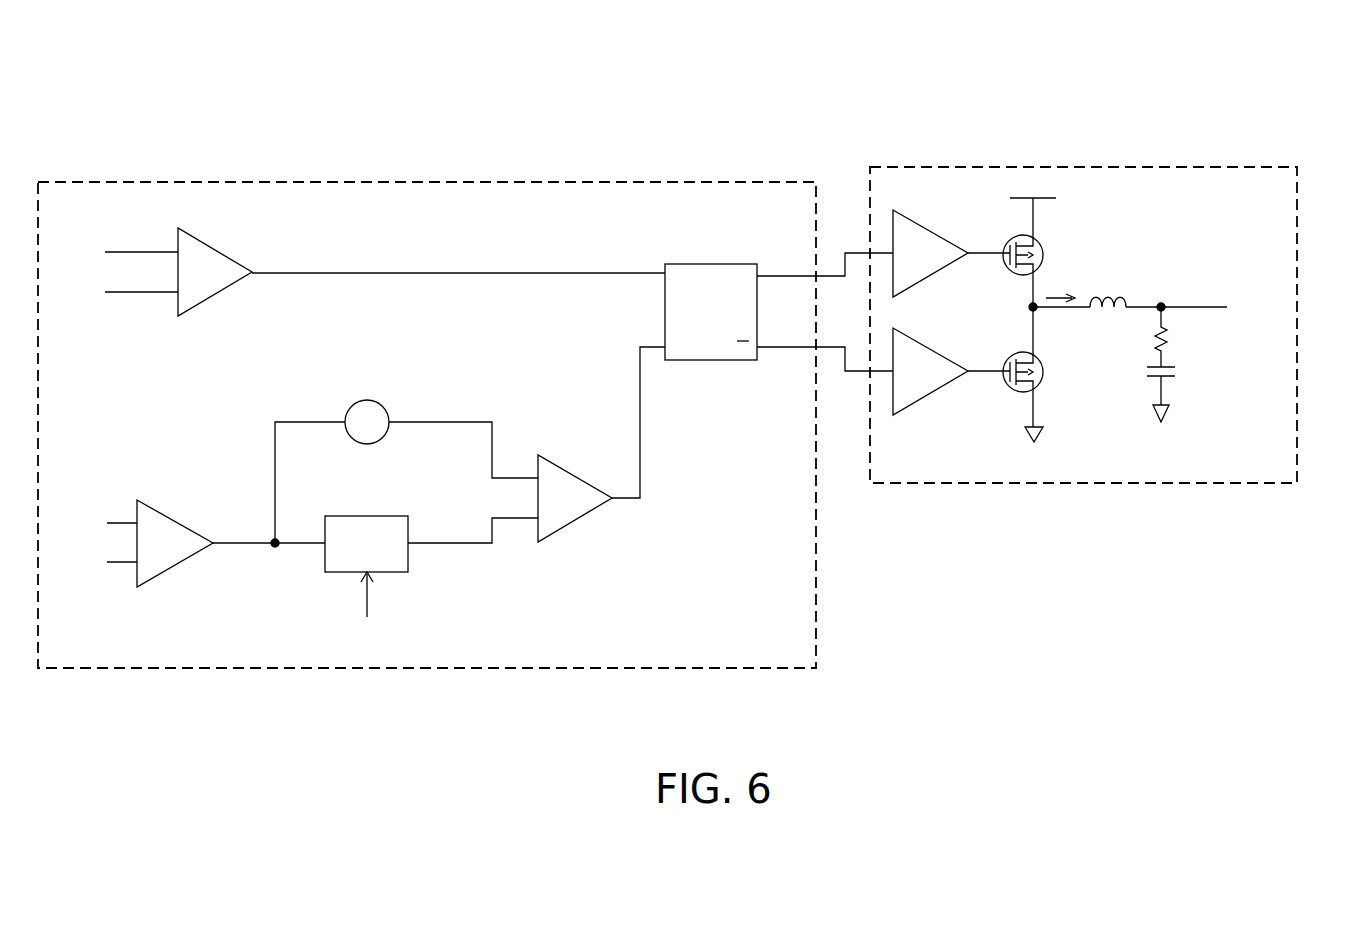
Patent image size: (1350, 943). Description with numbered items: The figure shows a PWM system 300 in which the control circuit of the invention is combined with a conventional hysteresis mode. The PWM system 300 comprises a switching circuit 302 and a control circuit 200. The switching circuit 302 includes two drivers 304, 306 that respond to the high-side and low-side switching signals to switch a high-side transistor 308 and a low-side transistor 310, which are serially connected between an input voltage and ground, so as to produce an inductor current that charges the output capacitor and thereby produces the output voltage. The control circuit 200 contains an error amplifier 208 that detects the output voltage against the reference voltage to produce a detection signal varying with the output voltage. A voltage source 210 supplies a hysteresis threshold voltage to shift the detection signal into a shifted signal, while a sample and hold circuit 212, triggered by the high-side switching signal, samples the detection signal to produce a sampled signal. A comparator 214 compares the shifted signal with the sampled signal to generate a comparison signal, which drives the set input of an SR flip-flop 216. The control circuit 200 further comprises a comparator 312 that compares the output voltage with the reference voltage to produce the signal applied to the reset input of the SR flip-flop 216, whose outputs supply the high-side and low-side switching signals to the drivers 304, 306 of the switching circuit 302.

The control circuit 200 is at (430, 182).
The error amplifier 208 is at (171, 514).
The voltage source 210 is at (387, 434).
The sample and hold circuit 212 is at (408, 560).
The comparator 214 is at (574, 470).
The SR flip-flop 216 is at (700, 264).
The PWM system 300 is at (1288, 117).
The switching circuit 302 is at (1107, 483).
The driver 304 is at (926, 233).
The driver 306 is at (925, 403).
The high-side transistor 308 is at (1047, 238).
The low-side transistor 310 is at (1046, 388).
The comparator 312 is at (217, 248).